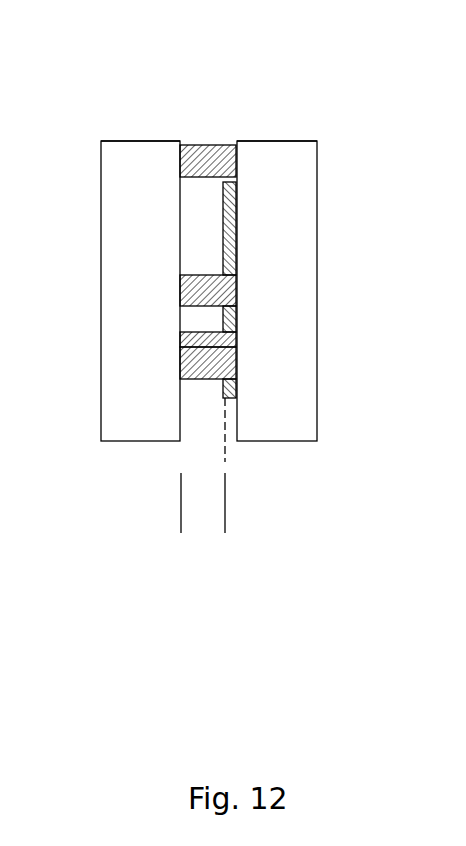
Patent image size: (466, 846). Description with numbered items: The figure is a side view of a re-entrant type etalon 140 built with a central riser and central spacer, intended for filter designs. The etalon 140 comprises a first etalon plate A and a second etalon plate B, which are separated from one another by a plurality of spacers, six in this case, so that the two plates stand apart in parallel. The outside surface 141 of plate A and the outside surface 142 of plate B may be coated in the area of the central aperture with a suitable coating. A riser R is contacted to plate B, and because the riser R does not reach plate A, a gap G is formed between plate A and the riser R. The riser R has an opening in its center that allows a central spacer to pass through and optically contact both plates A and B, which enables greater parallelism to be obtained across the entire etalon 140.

The etalon 140 is at (457, 53).
The outside surface of plate A 141 is at (101, 292).
The outside surface of plate B 142 is at (317, 285).
The first etalon plate A is at (139, 148).
The second etalon plate B is at (267, 165).
The riser R is at (237, 239).
The gap G is at (203, 522).